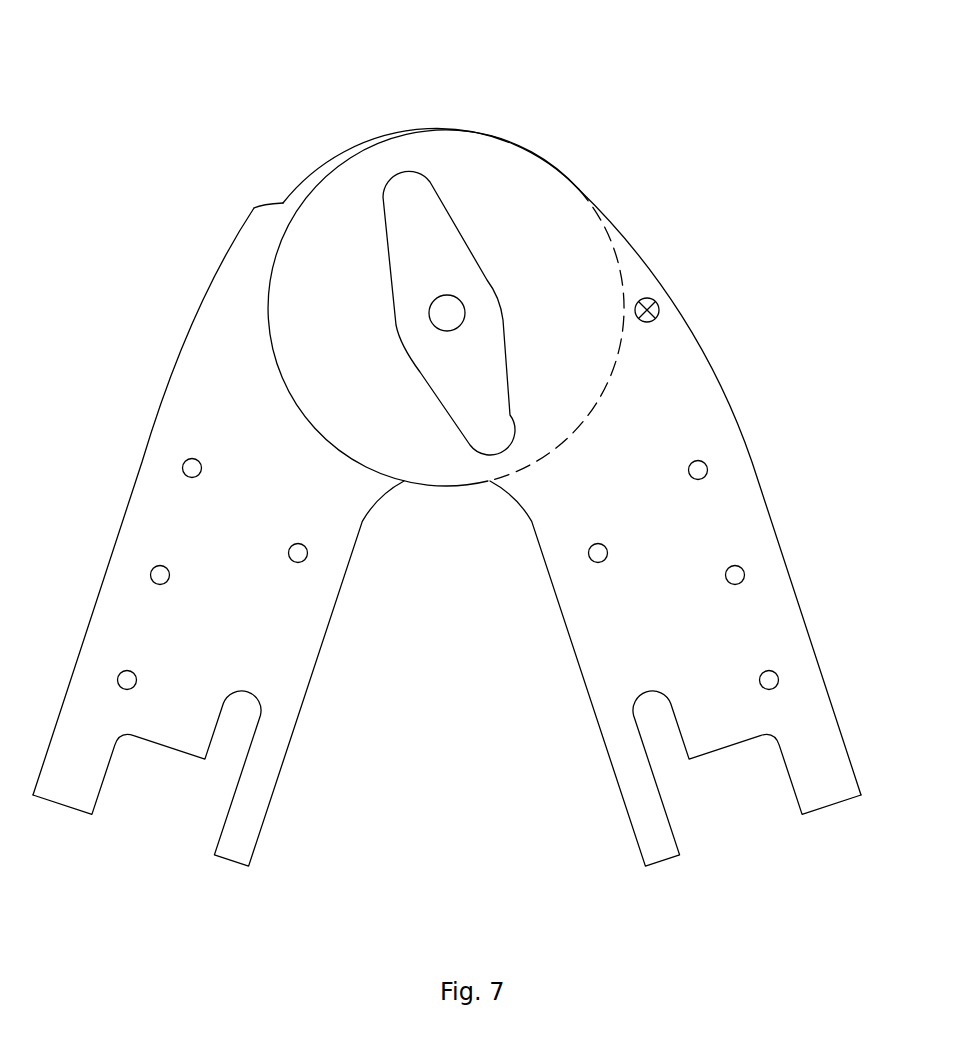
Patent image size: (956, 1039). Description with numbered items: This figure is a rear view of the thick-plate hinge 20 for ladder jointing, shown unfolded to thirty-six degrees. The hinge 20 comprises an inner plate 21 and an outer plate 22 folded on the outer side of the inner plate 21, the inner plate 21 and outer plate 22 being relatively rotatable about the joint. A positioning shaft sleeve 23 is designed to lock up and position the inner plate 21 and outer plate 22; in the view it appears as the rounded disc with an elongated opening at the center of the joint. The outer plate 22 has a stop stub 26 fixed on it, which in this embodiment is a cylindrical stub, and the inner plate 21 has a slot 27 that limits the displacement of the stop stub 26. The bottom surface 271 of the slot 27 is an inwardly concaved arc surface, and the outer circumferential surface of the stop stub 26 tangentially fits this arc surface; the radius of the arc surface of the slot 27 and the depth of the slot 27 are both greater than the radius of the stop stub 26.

The thick-plate hinge 20 is at (447, 437).
The inner plate 21 is at (165, 408).
The outer plate 22 is at (705, 395).
The positioning shaft sleeve 23 is at (435, 368).
The stop stub 26 is at (657, 300).
The slot 27 is at (262, 217).
The bottom surface 271 is at (283, 203).